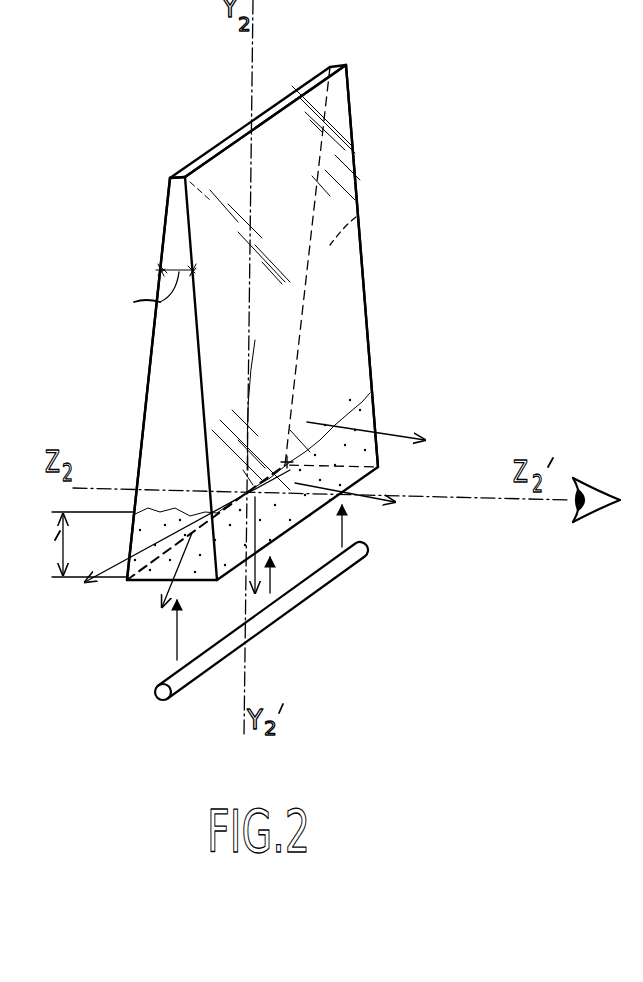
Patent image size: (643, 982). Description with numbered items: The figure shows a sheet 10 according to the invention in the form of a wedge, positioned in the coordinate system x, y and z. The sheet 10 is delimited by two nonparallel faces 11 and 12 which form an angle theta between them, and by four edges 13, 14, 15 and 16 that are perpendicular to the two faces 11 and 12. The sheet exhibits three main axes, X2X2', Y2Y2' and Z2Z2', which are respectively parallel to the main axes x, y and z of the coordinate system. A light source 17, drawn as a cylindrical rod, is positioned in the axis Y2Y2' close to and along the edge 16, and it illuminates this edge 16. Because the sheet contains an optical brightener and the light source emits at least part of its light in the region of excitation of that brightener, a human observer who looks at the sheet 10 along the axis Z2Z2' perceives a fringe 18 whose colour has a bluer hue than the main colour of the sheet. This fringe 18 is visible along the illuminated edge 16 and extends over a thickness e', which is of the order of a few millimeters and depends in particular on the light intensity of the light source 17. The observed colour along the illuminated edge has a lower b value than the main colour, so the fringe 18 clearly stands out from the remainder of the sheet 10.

The sheet 10 is at (208, 130).
The face 11 is at (330, 305).
The face 12 is at (187, 175).
The edge 13 is at (175, 370).
The edge 14 is at (275, 110).
The edge 15 is at (360, 217).
The edge 16 is at (160, 580).
The light source 17 is at (306, 607).
The fringe 18 is at (353, 433).